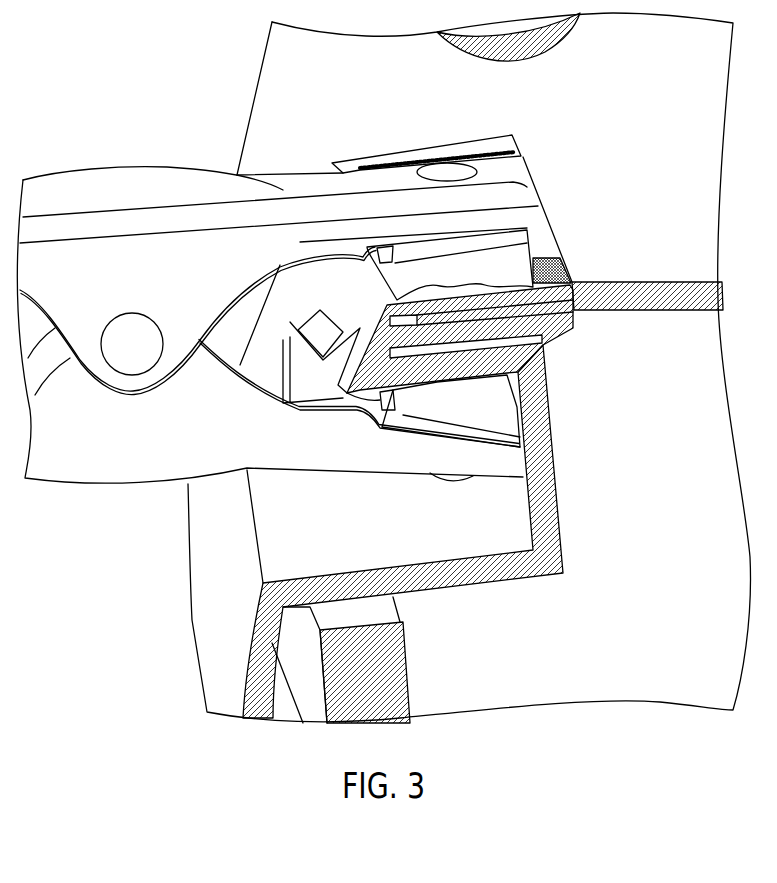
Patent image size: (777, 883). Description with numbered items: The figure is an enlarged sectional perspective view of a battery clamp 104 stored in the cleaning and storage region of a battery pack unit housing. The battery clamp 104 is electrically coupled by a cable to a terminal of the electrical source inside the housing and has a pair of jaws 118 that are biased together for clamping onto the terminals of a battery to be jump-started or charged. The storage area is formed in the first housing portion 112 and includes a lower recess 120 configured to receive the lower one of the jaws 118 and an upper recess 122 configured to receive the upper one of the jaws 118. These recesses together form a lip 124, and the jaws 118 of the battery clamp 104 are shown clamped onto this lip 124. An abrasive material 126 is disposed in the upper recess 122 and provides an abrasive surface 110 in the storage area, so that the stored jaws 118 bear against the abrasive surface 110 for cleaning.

The battery clamp 104 is at (105, 197).
The abrasive surface 110 is at (518, 155).
The first housing portion 112 is at (218, 698).
The jaws 118 is at (535, 240).
The recess 120 is at (465, 543).
The recess 122 is at (566, 256).
The lip 124 is at (355, 290).
The abrasive material 126 is at (575, 313).